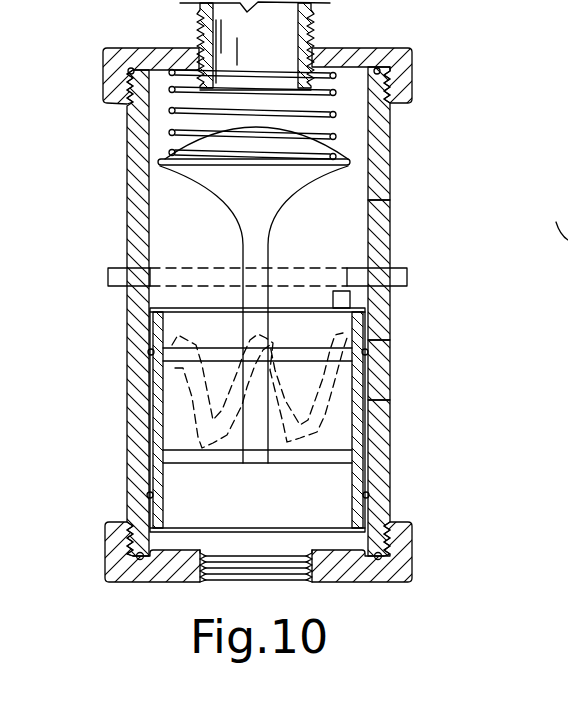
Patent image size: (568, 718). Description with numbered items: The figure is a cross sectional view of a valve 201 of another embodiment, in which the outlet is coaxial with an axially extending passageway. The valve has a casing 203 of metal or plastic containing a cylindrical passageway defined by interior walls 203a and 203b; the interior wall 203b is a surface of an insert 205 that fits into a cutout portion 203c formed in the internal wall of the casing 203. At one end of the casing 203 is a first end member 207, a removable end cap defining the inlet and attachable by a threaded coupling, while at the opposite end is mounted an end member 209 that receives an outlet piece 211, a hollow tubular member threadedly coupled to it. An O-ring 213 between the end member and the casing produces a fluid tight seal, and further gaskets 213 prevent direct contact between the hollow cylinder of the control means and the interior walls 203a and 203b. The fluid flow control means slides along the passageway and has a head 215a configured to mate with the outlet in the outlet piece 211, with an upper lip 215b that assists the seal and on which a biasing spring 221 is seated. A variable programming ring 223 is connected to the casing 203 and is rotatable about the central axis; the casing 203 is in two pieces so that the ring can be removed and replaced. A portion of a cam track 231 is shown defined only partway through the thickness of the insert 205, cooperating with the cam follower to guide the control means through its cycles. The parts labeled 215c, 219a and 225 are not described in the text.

The valve 201 is at (456, 96).
The casing 203 is at (392, 238).
The interior wall 203a is at (391, 150).
The interior wall 203b is at (384, 358).
The cutout portion 203c is at (384, 434).
The insert 205 is at (368, 383).
The first end member 207 is at (412, 546).
The end member 209 is at (410, 52).
The outlet piece 211 is at (313, 14).
The O-ring 213 is at (147, 352).
The head 215a is at (200, 147).
The upper lip 215b is at (160, 162).
The valve stem 215c is at (233, 223).
The stop block 219a is at (351, 298).
The biasing spring 221 is at (370, 113).
The variable programming ring 223 is at (117, 267).
The section B 225 is at (549, 242).
The cam track 231 is at (172, 403).